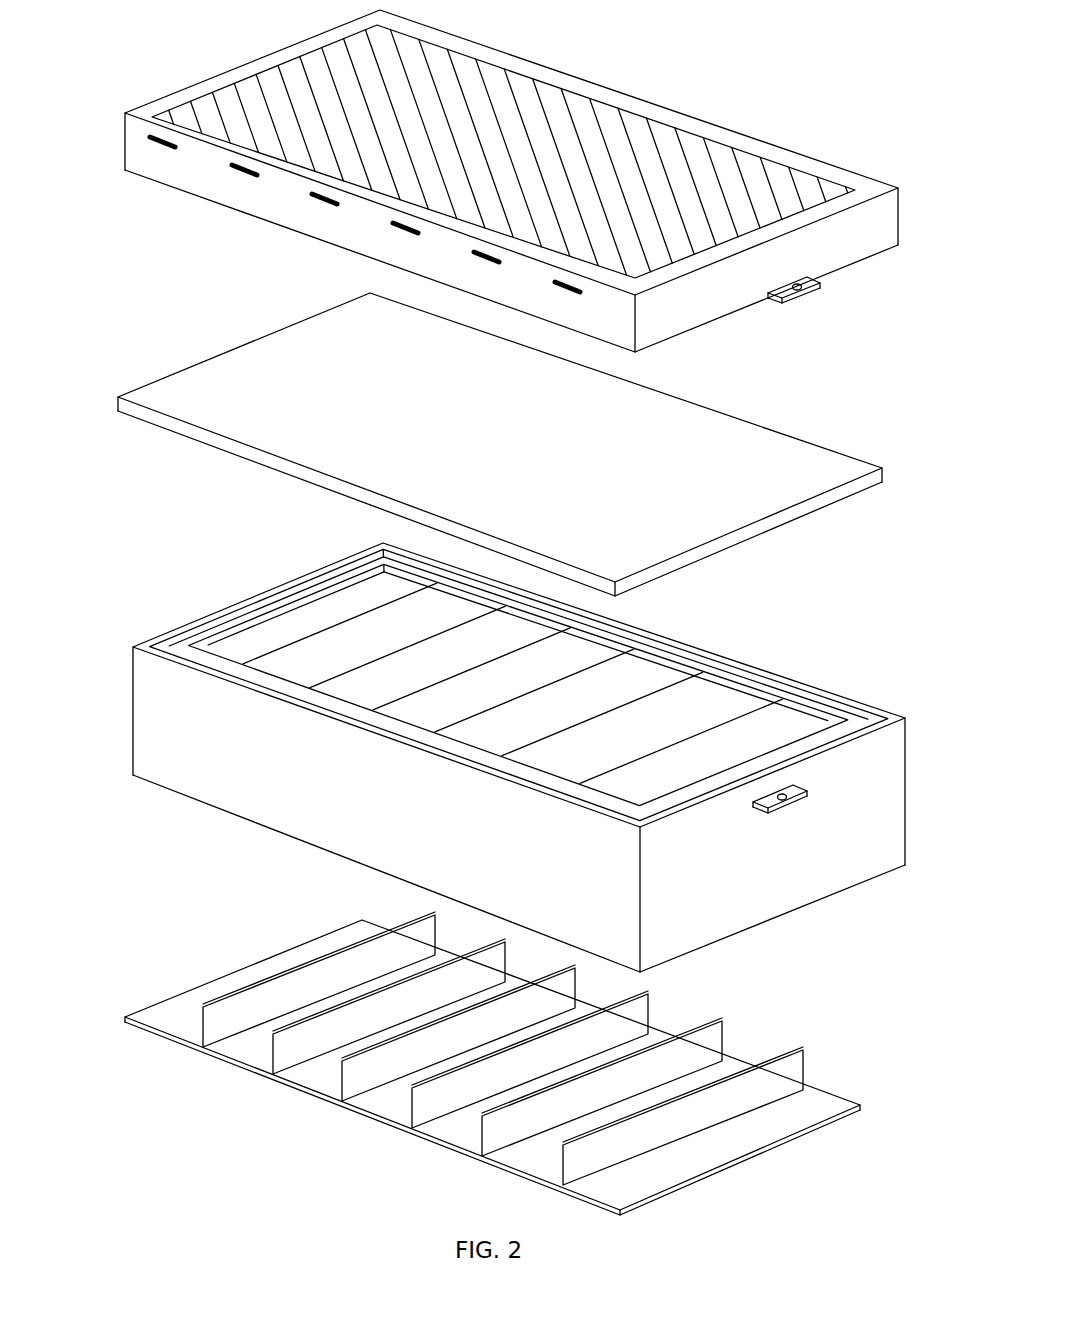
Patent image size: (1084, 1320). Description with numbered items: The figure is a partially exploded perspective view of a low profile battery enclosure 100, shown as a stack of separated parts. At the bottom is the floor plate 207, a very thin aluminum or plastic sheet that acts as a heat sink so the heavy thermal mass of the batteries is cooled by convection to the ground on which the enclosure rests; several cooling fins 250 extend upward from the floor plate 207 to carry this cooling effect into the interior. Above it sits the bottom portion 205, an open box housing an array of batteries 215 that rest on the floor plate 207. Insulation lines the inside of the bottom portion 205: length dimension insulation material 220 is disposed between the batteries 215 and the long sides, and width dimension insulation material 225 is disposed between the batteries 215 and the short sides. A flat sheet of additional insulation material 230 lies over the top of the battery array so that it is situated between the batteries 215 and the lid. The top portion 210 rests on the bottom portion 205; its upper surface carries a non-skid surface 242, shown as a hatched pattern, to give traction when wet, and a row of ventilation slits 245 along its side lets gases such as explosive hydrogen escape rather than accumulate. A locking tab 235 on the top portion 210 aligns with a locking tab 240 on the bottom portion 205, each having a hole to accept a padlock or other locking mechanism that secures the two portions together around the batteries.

The battery enclosure 100 is at (235, 1160).
The bottom portion 205 is at (263, 797).
The floor plate 207 is at (737, 1140).
The top portion 210 is at (687, 123).
The batteries 215 is at (620, 670).
The length dimension insulation material 220 is at (447, 575).
The width dimension insulation material 225 is at (288, 595).
The insulation material 230 is at (242, 398).
The locking tabs 235 is at (830, 285).
The locking tabs 240 is at (808, 799).
The non-skid surface 242 is at (500, 105).
The ventilation slits 245 is at (322, 227).
The cooling fins 250 is at (713, 1030).